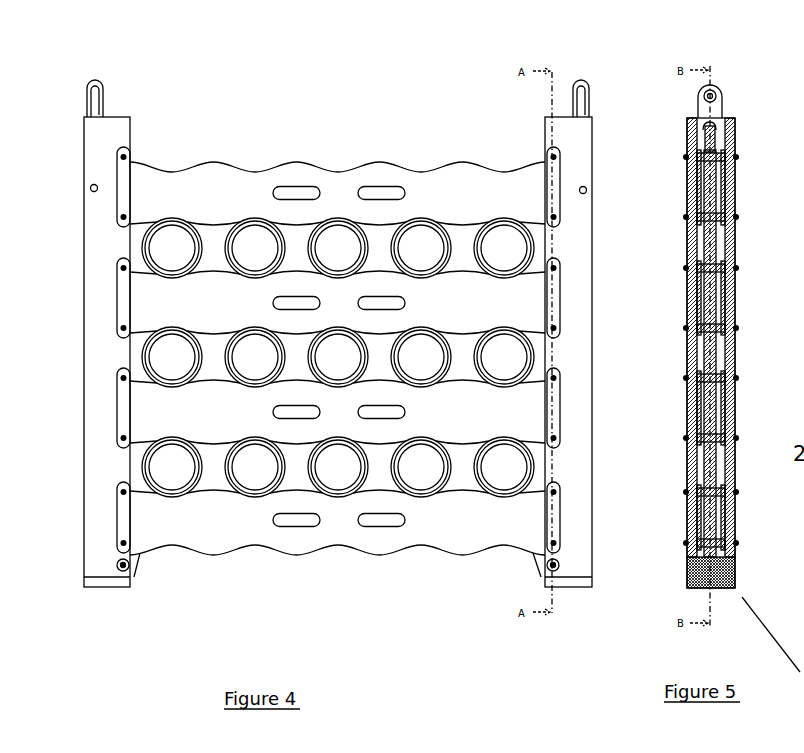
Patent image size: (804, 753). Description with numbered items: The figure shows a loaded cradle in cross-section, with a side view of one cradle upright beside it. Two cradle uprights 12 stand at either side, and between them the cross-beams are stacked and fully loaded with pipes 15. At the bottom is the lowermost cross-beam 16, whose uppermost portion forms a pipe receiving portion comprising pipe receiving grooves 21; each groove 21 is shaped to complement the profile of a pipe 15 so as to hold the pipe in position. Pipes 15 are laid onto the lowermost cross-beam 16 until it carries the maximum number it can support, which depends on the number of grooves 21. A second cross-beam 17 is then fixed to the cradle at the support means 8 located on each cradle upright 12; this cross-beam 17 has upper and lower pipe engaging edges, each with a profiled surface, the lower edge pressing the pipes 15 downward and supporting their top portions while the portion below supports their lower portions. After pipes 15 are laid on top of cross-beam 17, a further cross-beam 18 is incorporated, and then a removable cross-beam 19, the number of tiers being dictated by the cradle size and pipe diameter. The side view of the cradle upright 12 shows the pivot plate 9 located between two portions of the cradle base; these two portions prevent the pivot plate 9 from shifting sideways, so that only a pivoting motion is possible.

In FIG. 4, the support means 8 is at (556, 322).
In FIG. 5, the pivot plate 9 is at (685, 590).
In FIG. 4, the cradle upright 12 is at (100, 133).
In FIG. 4, the pipe 15 is at (417, 482).
In FIG. 4, the lowermost cross-beam 16 is at (252, 540).
In FIG. 4, the second cross-beam 17 is at (530, 413).
In FIG. 4, the further cross-beam 18 is at (500, 302).
In FIG. 4, the removable cross-beam 19 is at (419, 190).
In FIG. 4, the pipe receiving groove 21 is at (237, 502).